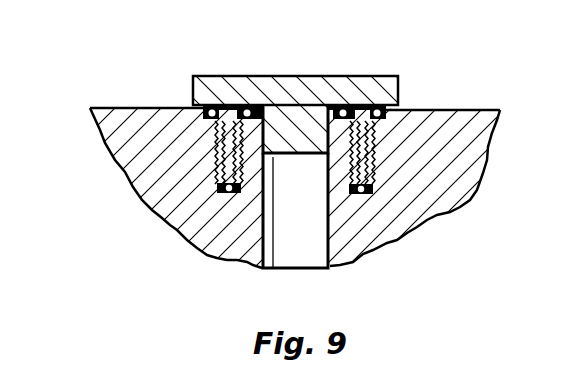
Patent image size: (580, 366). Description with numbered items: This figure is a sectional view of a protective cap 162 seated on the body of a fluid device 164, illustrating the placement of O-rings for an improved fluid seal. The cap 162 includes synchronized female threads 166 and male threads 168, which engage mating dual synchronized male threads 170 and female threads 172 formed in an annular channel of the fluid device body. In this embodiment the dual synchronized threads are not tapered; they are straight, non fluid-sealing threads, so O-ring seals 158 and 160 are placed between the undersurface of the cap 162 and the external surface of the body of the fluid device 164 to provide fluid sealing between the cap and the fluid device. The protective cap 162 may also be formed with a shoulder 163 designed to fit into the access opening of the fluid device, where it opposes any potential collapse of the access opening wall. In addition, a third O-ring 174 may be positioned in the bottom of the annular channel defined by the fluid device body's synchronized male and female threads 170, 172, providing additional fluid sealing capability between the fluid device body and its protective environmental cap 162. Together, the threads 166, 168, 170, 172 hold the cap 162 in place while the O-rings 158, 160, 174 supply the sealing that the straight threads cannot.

The O-ring seal 158 is at (396, 117).
The O-ring seal 160 is at (303, 157).
The protective cap 162 is at (325, 83).
The shoulder 163 is at (287, 132).
The fluid device 164 is at (405, 202).
The female threads 166 is at (347, 152).
The male threads 168 is at (372, 158).
The male threads 170 is at (228, 165).
The female threads 172 is at (224, 152).
The third O-ring 174 is at (362, 186).